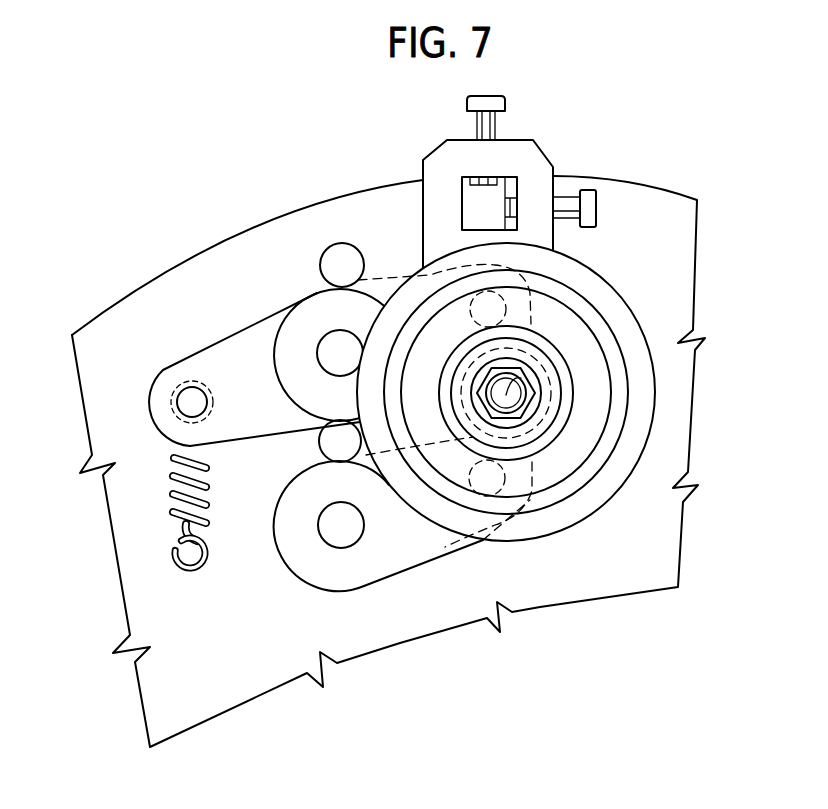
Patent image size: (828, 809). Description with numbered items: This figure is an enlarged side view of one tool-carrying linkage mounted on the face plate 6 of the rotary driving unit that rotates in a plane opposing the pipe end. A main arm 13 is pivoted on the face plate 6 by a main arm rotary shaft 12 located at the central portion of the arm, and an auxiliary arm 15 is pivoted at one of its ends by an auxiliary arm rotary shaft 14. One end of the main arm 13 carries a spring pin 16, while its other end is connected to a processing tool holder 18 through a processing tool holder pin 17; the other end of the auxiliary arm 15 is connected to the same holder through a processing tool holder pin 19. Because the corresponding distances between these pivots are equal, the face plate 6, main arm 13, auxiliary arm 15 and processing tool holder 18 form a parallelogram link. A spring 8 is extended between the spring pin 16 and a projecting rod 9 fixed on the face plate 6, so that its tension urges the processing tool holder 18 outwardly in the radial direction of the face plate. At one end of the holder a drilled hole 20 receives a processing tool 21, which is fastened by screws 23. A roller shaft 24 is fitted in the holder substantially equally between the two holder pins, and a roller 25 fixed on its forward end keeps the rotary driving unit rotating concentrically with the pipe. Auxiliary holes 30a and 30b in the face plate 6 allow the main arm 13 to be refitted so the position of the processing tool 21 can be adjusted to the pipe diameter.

The face plate 6 is at (178, 258).
The spring 8 is at (170, 493).
The projecting rod 9 is at (188, 553).
The main arm rotary shaft 12 is at (333, 330).
The main arm 13 is at (255, 322).
The auxiliary arm rotary shaft 14 is at (324, 543).
The auxiliary arm 15 is at (362, 590).
The spring pin 16 is at (180, 387).
The processing tool holder pin 17 is at (507, 308).
The processing tool holder 18 is at (518, 140).
The processing tool holder pin 19 is at (500, 492).
The drilled hole 20 is at (470, 178).
The processing tool 21 is at (520, 187).
The screw 23 is at (488, 96).
The roller shaft 24 is at (357, 415).
The roller 25 is at (655, 377).
The auxiliary hole 30a is at (342, 242).
The auxiliary hole 30b is at (362, 442).